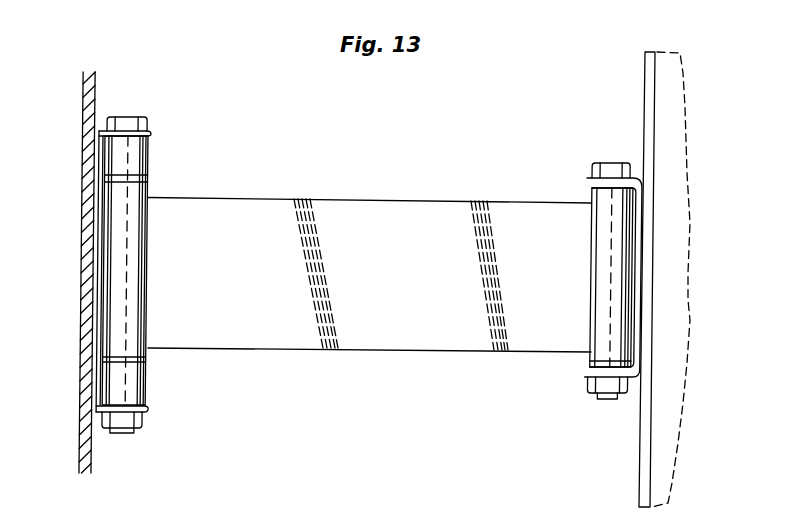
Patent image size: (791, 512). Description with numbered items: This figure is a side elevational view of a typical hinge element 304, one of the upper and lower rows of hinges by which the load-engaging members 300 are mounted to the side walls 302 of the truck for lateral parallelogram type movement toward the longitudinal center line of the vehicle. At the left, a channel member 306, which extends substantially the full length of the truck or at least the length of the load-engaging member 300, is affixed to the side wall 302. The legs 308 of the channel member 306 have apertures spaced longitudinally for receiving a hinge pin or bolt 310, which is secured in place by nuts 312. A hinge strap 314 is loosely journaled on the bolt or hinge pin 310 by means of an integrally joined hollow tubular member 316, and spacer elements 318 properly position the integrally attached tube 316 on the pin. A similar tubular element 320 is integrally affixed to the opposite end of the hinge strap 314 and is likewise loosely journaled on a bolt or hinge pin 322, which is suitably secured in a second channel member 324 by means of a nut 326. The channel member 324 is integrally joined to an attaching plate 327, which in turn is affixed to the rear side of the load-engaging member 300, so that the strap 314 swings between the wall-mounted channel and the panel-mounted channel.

The load-engaging member 300 is at (687, 174).
The side wall 302 is at (82, 442).
The hinge element 304 is at (450, 157).
The channel member 306 is at (101, 199).
The legs of the channel member 308 is at (151, 133).
The hinge pin or bolt 310 is at (129, 116).
The nut 312 is at (140, 434).
The hinge strap 314 is at (385, 329).
The hollow tubular member 316 is at (142, 283).
The spacer element 318 is at (147, 160).
The tubular element 320 is at (603, 296).
The hinge pin or bolt 322 is at (602, 164).
The channel member 324 is at (638, 322).
The nut 326 is at (606, 394).
The attaching plate 327 is at (648, 92).